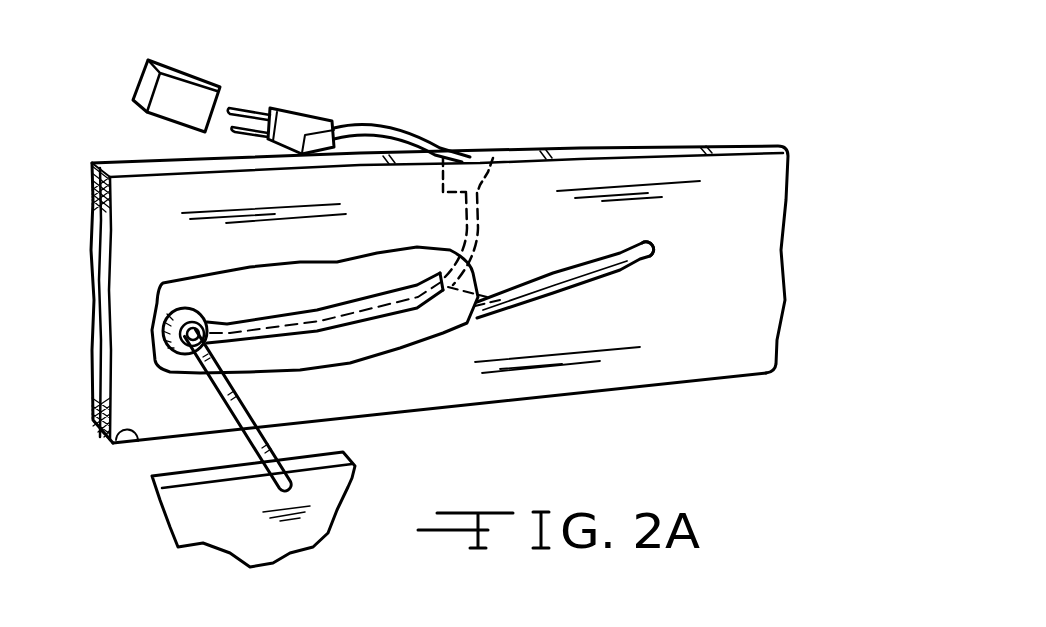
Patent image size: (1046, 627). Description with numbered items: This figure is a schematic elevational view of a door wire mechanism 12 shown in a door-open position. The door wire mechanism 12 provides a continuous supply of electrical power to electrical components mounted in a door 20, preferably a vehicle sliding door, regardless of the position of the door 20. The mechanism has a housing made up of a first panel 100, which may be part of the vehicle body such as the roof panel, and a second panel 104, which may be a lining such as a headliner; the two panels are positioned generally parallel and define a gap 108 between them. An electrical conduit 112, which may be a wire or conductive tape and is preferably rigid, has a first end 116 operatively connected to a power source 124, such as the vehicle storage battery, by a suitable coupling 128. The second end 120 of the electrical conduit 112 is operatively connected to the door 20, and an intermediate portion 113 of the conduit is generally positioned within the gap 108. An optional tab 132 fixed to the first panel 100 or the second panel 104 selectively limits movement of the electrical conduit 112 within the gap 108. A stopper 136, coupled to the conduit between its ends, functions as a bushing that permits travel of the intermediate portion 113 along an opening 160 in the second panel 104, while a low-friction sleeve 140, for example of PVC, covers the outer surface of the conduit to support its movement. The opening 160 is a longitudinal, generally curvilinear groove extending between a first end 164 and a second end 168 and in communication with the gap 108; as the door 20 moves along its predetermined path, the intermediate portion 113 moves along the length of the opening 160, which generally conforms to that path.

The door wire mechanism 12 is at (671, 108).
The door 20 is at (357, 474).
The first panel 100 is at (92, 262).
The second panel 104 is at (137, 440).
The gap 108 is at (100, 322).
The electrical conduit 112 is at (482, 230).
The intermediate portion 113 is at (440, 275).
The first end 116 is at (367, 125).
The second end 120 is at (284, 437).
The power source 124 is at (213, 70).
The coupling 128 is at (297, 108).
The tab 132 is at (510, 143).
The stopper 136 is at (206, 320).
The sleeve 140 is at (352, 302).
The opening 160 is at (613, 284).
The first end 164 is at (233, 342).
The second end 168 is at (651, 243).